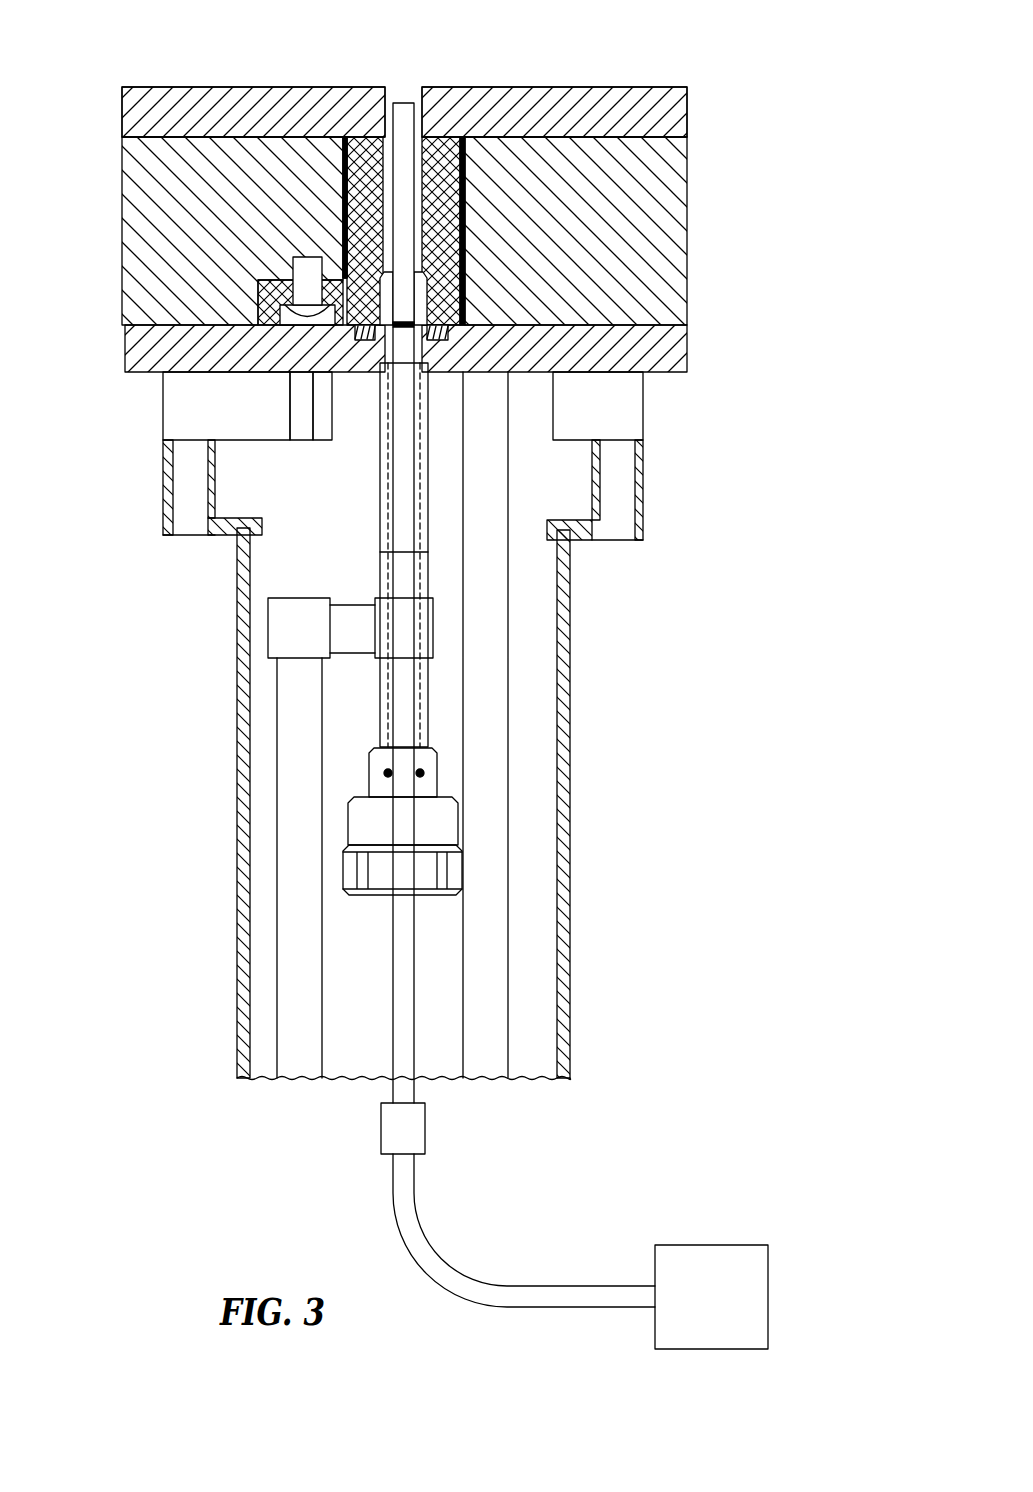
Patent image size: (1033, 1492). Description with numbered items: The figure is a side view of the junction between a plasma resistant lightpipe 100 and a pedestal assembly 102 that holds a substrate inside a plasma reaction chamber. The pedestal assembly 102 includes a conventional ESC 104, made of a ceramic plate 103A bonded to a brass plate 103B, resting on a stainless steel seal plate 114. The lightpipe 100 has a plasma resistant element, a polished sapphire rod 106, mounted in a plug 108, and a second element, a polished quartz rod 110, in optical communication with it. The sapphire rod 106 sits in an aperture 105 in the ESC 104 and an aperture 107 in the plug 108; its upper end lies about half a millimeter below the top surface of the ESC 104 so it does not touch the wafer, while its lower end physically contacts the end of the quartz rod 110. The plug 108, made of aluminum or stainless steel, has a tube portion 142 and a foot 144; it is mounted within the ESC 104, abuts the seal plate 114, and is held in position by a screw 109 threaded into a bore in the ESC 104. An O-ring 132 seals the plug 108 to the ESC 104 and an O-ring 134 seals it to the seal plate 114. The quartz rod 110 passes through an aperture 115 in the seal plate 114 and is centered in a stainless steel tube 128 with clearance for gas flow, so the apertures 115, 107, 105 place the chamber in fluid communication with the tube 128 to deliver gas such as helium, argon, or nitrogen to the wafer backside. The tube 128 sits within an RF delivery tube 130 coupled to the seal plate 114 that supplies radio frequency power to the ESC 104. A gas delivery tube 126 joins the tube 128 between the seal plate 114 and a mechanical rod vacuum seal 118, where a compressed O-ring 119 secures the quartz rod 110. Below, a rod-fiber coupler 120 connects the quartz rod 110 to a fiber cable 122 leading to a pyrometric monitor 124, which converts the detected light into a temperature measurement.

The plasma resistant lightpipe 100 is at (348, 465).
The pedestal assembly 102 is at (735, 76).
The ceramic plate 103A is at (630, 87).
The brass plate 103B is at (682, 213).
The ESC 104 is at (682, 130).
The aperture 105 is at (417, 76).
The sapphire rod 106 is at (404, 112).
The aperture 107 is at (456, 146).
The plug 108 is at (338, 180).
The screw 109 is at (307, 257).
The quartz rod 110 is at (407, 383).
The seal plate 114 is at (682, 343).
The aperture 115 is at (430, 342).
The mechanical rod vacuum seal 118 is at (448, 822).
The O-ring 119 is at (424, 773).
The rod-fiber coupler 120 is at (428, 1140).
The fiber cable 122 is at (543, 1284).
The pyrometric monitor 124 is at (738, 1244).
The gas delivery tube 126 is at (315, 990).
The stainless steel tube 128 is at (421, 490).
The RF delivery tube 130 is at (237, 900).
The O-ring 132 is at (365, 145).
The O-ring 134 is at (372, 345).
The tube portion 142 is at (345, 147).
The foot 144 is at (257, 296).